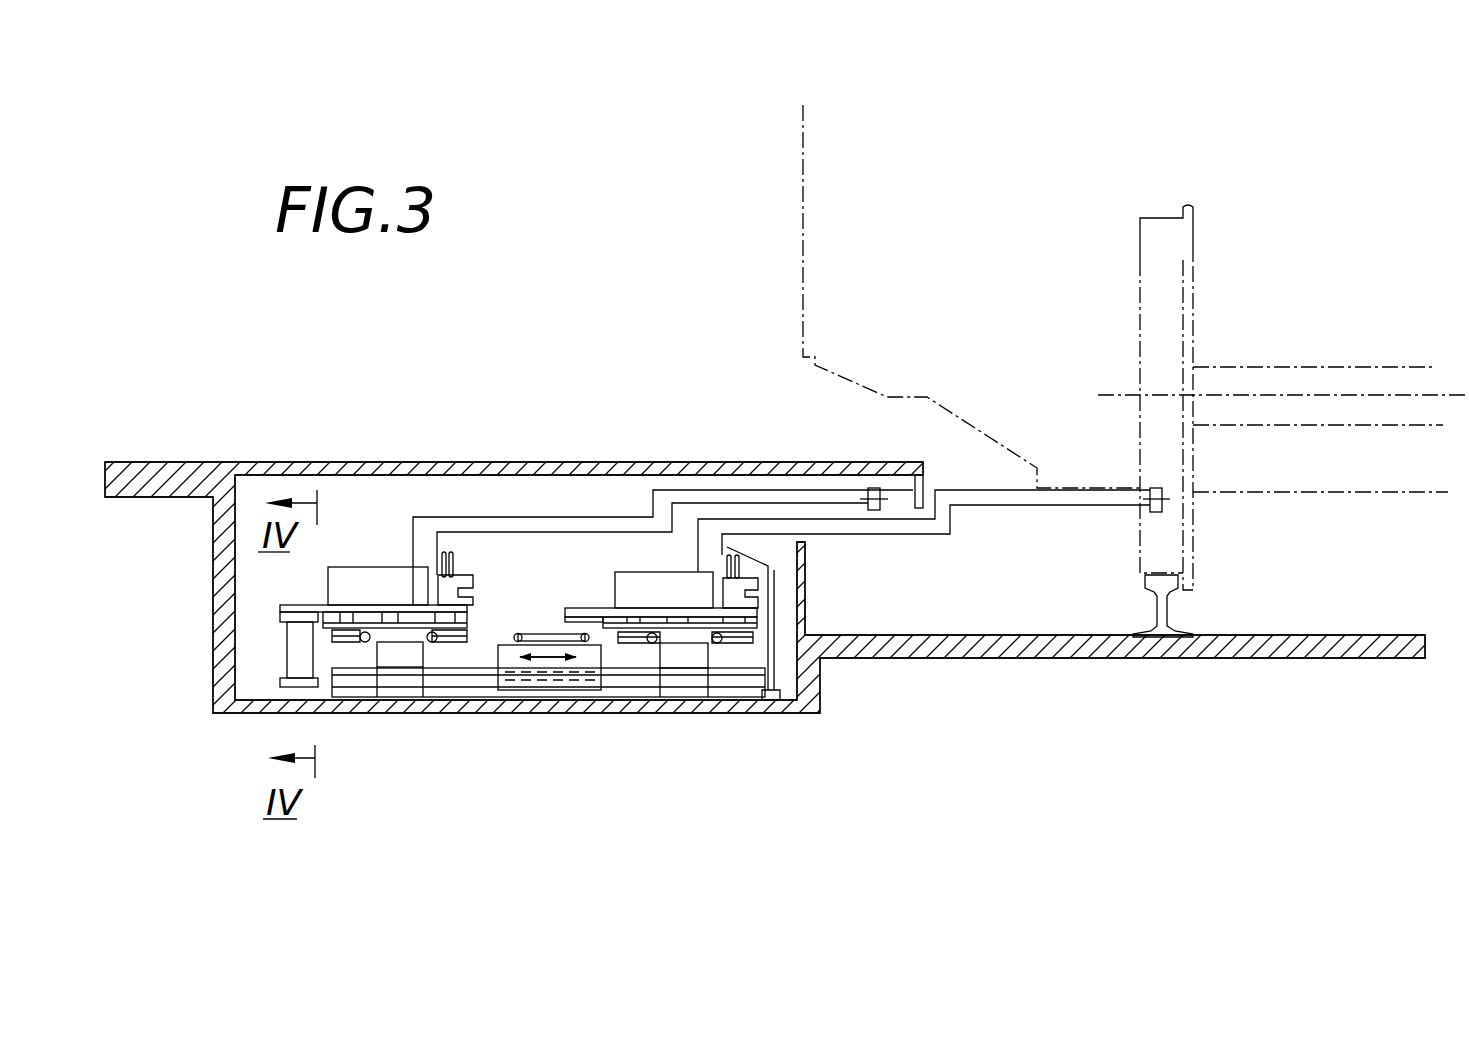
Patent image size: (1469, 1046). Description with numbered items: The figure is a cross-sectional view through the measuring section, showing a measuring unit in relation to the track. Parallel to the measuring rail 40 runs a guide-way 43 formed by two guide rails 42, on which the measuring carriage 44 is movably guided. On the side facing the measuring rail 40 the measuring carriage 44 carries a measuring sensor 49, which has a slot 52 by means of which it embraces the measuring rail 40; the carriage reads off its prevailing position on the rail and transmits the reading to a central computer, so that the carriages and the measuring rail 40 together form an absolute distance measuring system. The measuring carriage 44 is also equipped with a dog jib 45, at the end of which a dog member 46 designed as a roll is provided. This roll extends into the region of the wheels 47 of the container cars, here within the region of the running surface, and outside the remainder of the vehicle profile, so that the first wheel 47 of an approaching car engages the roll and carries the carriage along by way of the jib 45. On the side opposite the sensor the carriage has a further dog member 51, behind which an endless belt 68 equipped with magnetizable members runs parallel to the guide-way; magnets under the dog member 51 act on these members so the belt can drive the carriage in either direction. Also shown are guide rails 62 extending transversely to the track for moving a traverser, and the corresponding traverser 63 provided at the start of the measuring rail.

The measuring rail 40 is at (760, 594).
The guide rails 42 is at (652, 655).
The guide-way 43 is at (680, 731).
The measuring carriage 44 is at (600, 548).
The dog jib 45 is at (513, 530).
The dog member 46 is at (876, 488).
The wheel 47 is at (1143, 248).
The measuring sensor 49 is at (456, 577).
The dog member 51 is at (592, 612).
The slot 52 is at (478, 590).
The guide rails 62 is at (467, 680).
The traverser 63 is at (570, 680).
The endless belt 68 is at (295, 645).